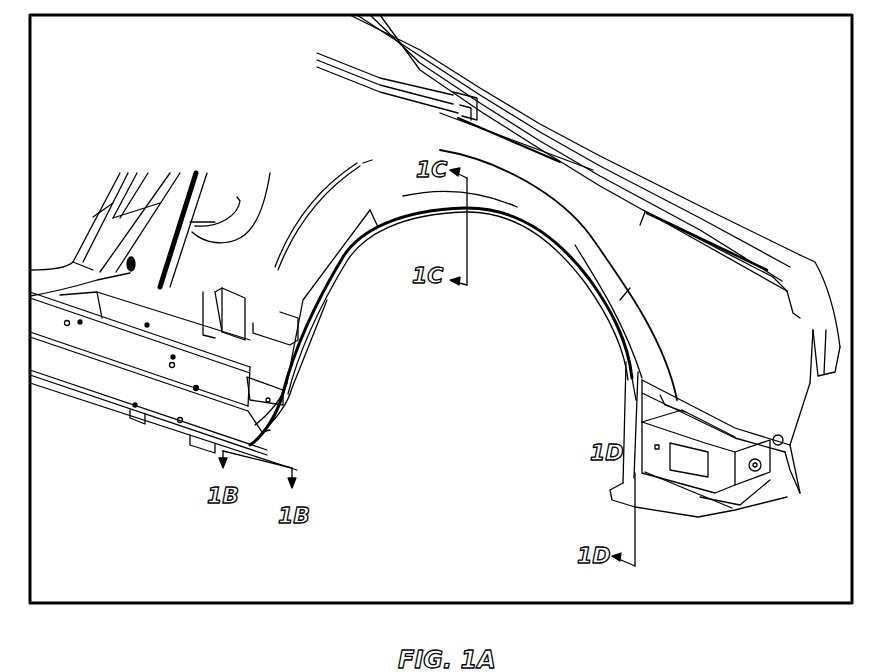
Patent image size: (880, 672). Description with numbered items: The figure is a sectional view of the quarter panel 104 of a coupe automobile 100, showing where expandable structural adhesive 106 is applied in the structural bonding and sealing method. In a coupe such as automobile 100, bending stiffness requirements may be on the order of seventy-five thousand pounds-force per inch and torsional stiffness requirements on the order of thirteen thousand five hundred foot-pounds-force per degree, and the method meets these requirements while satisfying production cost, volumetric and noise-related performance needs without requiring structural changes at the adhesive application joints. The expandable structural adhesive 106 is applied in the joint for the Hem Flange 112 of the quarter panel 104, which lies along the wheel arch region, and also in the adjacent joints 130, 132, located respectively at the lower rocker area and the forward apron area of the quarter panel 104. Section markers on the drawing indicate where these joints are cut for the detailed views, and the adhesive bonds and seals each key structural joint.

The automobile 100 is at (415, 207).
The quarter panel 104 is at (730, 185).
The expandable structural adhesive 106 is at (300, 372).
The Hem Flange 112 is at (508, 238).
The adjacent joint 130 is at (202, 477).
The adjacent joint 132 is at (598, 498).